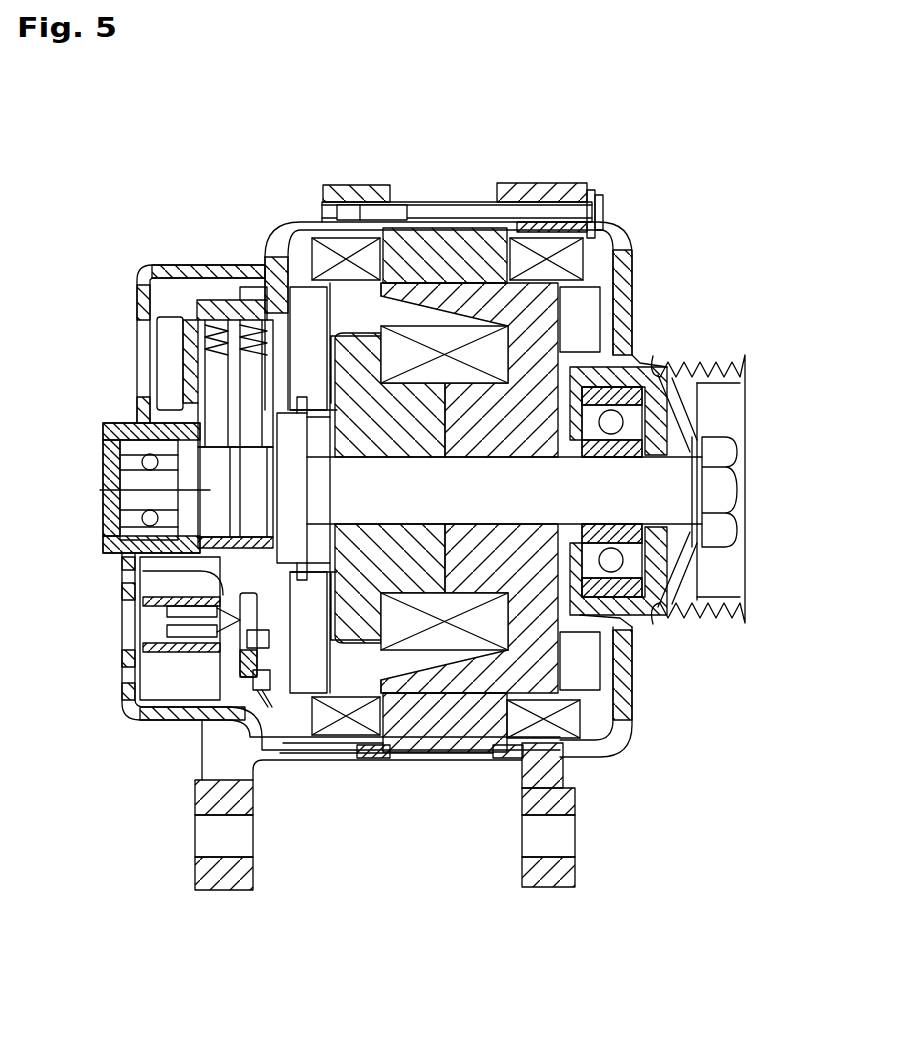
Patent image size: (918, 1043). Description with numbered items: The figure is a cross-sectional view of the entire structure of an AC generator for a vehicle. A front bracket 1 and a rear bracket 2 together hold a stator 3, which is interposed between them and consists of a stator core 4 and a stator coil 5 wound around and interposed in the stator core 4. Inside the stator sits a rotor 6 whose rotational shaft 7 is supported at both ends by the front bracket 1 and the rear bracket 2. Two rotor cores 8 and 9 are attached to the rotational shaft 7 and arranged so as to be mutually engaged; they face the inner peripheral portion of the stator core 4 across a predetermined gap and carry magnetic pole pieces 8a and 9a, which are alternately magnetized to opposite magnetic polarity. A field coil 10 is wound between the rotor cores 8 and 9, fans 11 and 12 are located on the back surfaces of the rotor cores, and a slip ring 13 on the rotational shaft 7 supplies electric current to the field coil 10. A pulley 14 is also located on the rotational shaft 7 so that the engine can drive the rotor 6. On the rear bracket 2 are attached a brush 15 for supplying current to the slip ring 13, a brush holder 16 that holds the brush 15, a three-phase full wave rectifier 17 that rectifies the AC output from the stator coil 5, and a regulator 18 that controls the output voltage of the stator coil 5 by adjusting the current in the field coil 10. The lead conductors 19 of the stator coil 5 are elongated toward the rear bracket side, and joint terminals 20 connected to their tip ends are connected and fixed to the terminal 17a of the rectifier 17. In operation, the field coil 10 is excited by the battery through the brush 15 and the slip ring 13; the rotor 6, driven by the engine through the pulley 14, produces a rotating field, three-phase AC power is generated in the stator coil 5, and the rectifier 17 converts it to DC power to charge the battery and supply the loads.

The front bracket 1 is at (627, 692).
The rear bracket 2 is at (140, 718).
The stator 3 is at (433, 238).
The stator core 4 is at (457, 243).
The stator coil 5 is at (538, 242).
The rotor 6 is at (560, 353).
The rotational shaft 7 is at (673, 492).
The rotor core 8 is at (360, 720).
The magnetic pole piece 8a is at (367, 300).
The rotor core 9 is at (378, 474).
The magnetic pole piece 9a is at (415, 293).
The field coil 10 is at (435, 638).
The fan 11 is at (587, 308).
The fan 12 is at (300, 300).
The slip ring 13 is at (110, 493).
The pulley 14 is at (697, 367).
The brush 15 is at (215, 367).
The brush holder 16 is at (235, 307).
The three-phase full wave rectifier 17 is at (160, 637).
The terminal 17a is at (143, 573).
The regulator 18 is at (187, 327).
The mounting bracket 19 is at (297, 733).
The joint terminal 20 is at (253, 677).